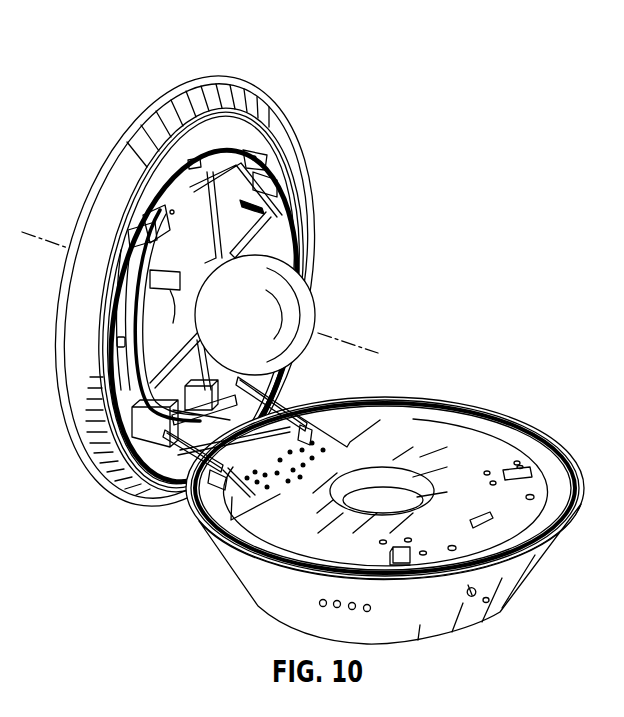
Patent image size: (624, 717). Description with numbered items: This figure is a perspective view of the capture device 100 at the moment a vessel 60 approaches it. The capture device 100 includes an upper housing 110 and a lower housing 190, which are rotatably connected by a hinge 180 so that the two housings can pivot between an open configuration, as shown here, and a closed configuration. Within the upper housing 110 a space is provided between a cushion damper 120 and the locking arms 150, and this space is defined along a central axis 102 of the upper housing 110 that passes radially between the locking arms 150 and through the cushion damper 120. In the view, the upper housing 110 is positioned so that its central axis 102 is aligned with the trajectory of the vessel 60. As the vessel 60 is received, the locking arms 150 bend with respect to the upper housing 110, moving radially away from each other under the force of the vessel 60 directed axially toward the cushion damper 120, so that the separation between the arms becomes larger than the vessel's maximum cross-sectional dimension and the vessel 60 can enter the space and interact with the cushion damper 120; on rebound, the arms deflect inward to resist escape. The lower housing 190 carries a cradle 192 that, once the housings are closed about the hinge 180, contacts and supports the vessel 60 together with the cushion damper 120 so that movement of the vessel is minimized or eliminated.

The capture device 100 is at (118, 40).
The upper housing 110 is at (200, 80).
The cushion damper 120 is at (172, 292).
The locking arm 150 is at (272, 212).
The vessel 60 is at (313, 298).
The central axis 102 is at (380, 352).
The lower housing 190 is at (460, 410).
The cradle 192 is at (505, 460).
The hinge 180 is at (182, 487).